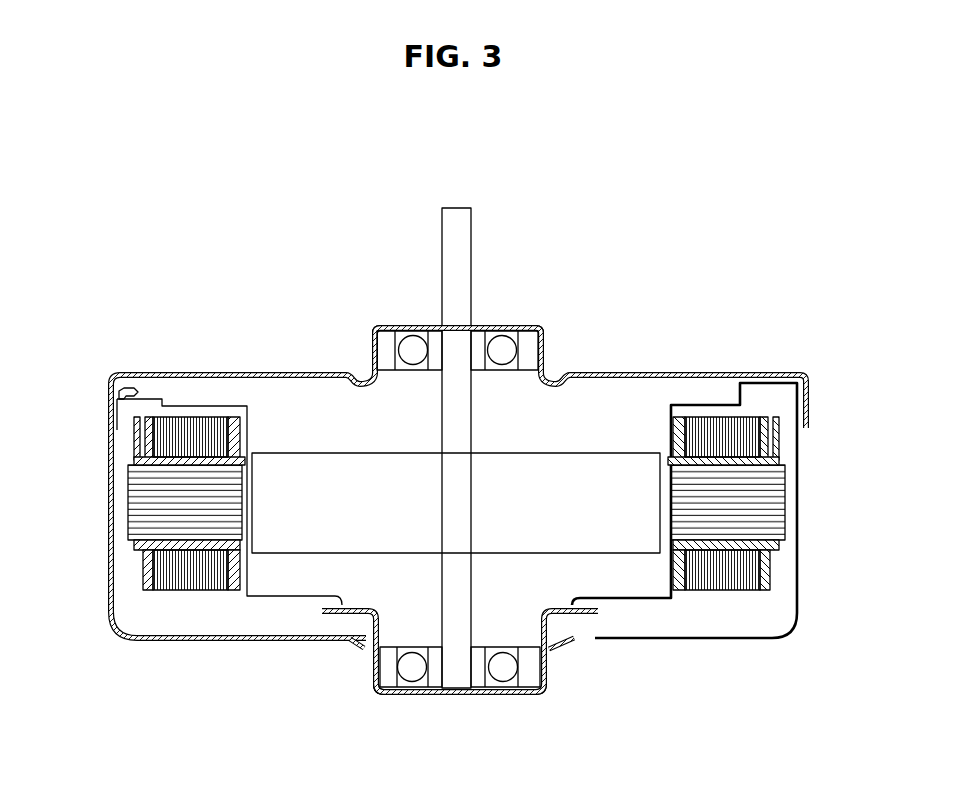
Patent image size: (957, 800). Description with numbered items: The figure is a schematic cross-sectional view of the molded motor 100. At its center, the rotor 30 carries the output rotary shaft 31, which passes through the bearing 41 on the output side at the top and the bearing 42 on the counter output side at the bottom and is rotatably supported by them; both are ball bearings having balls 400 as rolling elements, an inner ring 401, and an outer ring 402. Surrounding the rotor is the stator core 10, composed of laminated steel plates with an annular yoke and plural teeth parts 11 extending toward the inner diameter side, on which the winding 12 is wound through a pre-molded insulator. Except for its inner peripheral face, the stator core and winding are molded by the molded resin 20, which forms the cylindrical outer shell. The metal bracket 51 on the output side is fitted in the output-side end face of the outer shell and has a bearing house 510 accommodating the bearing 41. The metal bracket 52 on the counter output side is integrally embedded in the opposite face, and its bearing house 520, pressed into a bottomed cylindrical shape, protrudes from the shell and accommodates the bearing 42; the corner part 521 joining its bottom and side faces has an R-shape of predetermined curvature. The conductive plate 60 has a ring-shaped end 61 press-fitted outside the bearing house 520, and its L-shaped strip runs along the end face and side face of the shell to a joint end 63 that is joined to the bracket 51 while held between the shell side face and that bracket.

The molded motor 100 is at (702, 270).
The stator core 10 is at (128, 508).
The teeth parts 11 is at (238, 583).
The winding 12 is at (170, 578).
The molded resin 20 is at (783, 569).
The rotor 30 is at (590, 432).
The output rotary shaft 31 is at (460, 224).
The bearing on the output side 41 is at (477, 333).
The bearing on the counter output side 42 is at (482, 645).
The balls 400 is at (412, 350).
The inner ring 401 is at (437, 343).
The outer ring 402 is at (385, 347).
The bracket on the output side 51 is at (783, 372).
The bearing house on the output side 510 is at (547, 330).
The bracket on the counter output side 52 is at (585, 612).
The bearing house on the counter output side 520 is at (548, 692).
The corner part 521 is at (372, 698).
The conductive plate 60 is at (115, 638).
The ring-shaped end 61 is at (355, 642).
The joint end 63 is at (128, 392).